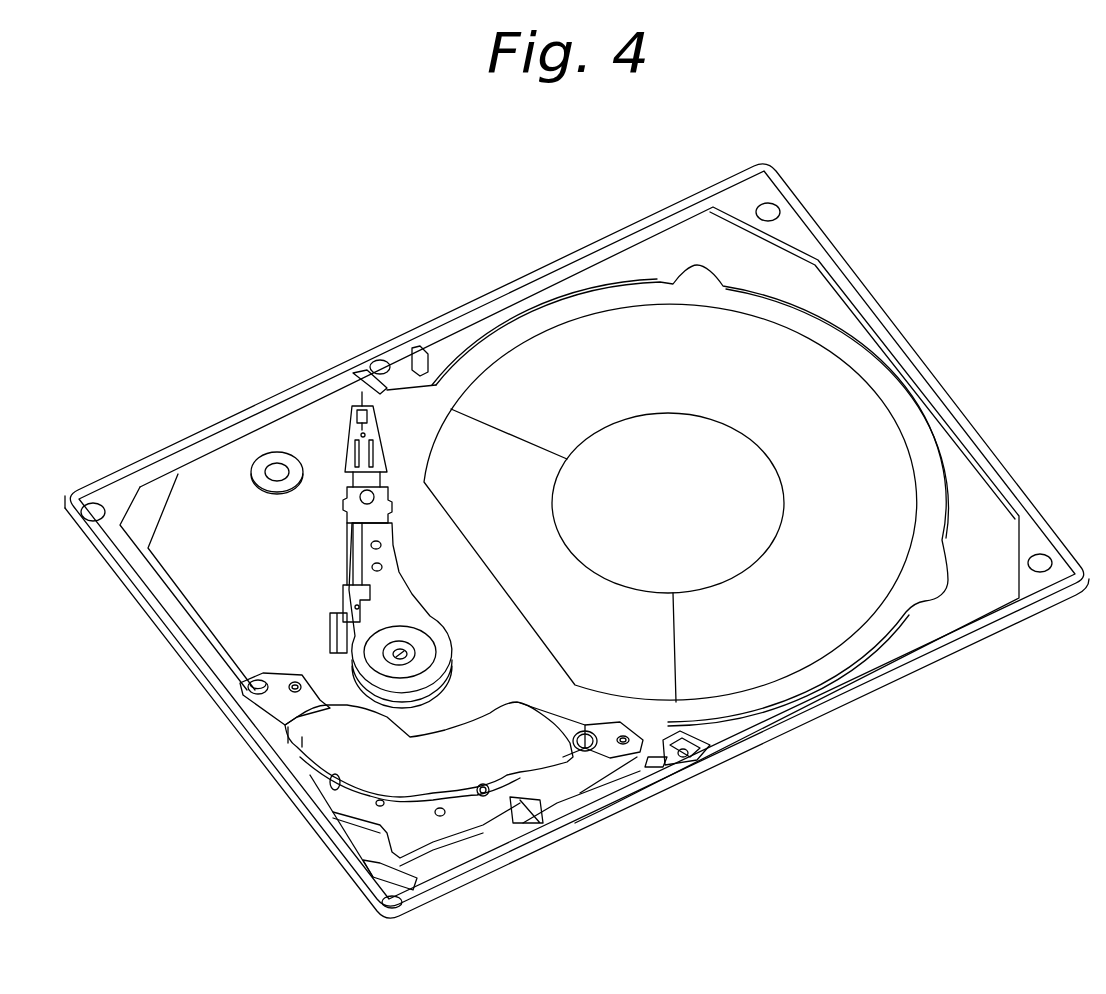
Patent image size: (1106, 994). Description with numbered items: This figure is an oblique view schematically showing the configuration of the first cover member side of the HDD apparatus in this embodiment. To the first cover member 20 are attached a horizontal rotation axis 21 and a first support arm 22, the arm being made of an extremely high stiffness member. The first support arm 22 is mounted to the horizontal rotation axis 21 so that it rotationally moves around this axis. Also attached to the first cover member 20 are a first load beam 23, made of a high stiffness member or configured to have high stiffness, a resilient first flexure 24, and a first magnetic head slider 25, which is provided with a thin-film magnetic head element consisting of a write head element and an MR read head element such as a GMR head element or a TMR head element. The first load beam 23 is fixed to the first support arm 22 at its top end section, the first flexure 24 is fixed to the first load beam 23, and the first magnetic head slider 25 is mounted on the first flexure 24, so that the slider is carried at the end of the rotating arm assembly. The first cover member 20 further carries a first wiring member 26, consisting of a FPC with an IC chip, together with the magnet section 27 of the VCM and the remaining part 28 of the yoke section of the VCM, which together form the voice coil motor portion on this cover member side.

The first cover member 20 is at (859, 177).
The horizontal rotation axis 21 is at (412, 650).
The first support arm 22 is at (392, 594).
The first load beam 23 is at (376, 516).
The first flexure 24 is at (370, 462).
The first magnetic head slider 25 is at (353, 402).
The first wiring member 26 is at (348, 549).
The magnet section 27 is at (325, 741).
The remaining part of the yoke section 28 is at (510, 790).